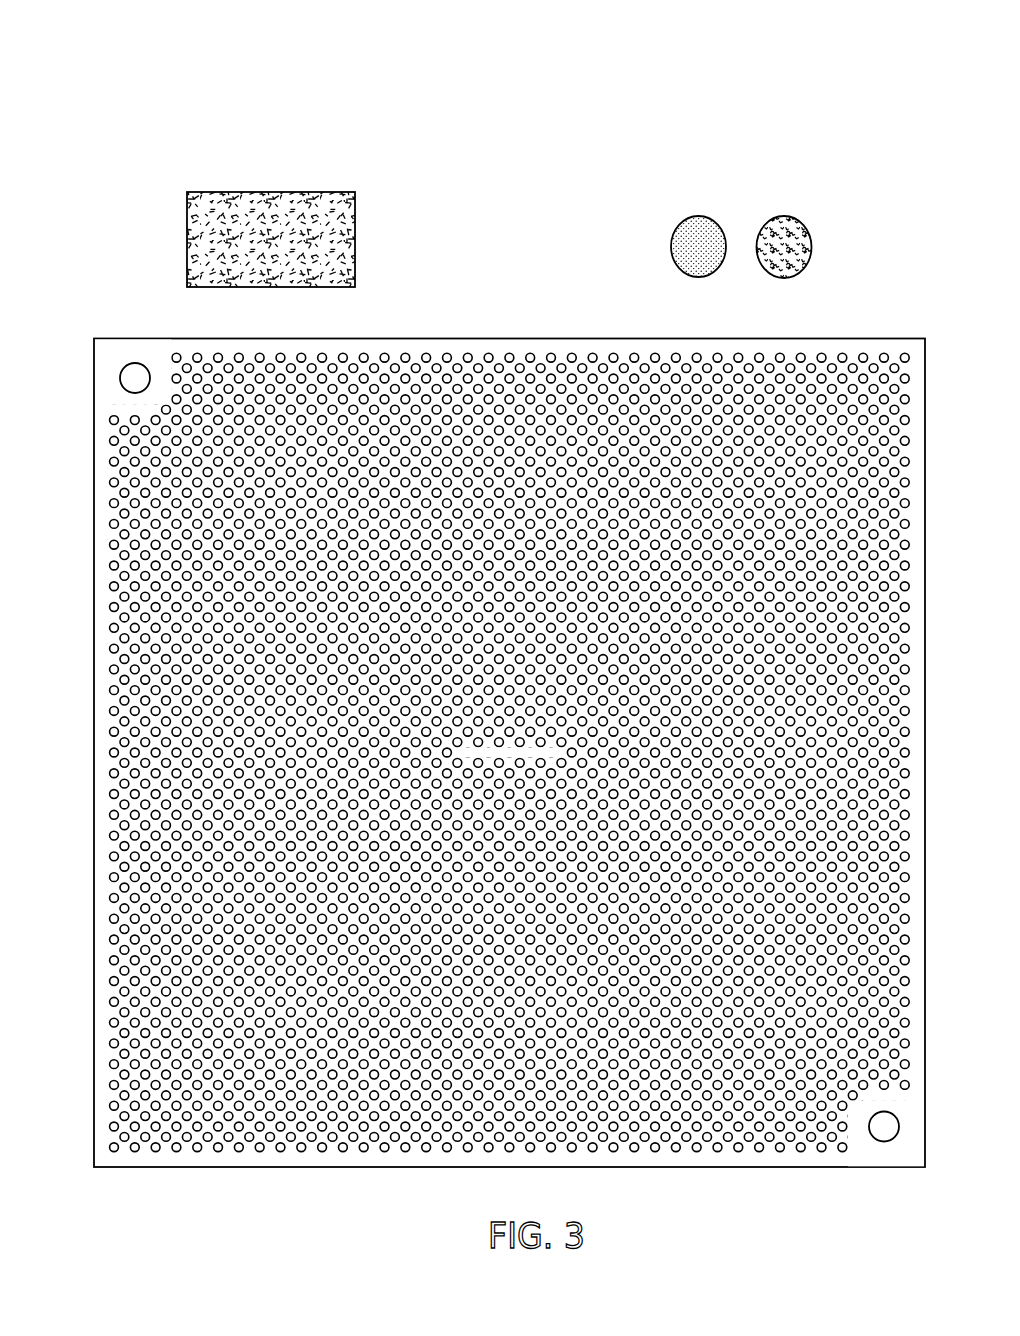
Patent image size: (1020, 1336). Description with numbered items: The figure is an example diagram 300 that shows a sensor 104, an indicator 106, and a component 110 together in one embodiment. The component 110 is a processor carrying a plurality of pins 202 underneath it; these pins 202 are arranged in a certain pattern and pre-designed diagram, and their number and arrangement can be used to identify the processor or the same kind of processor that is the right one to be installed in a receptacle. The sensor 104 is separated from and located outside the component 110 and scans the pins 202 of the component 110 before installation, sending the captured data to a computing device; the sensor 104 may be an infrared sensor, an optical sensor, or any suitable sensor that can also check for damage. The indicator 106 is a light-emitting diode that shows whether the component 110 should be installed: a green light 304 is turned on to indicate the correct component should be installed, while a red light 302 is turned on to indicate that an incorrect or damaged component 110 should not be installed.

The example diagram 300 is at (782, 52).
The sensor 104 is at (187, 218).
The indicator 106 is at (732, 176).
The red light 302 is at (672, 246).
The green light 304 is at (812, 247).
The component 110 is at (93, 794).
The pins 202 is at (198, 540).